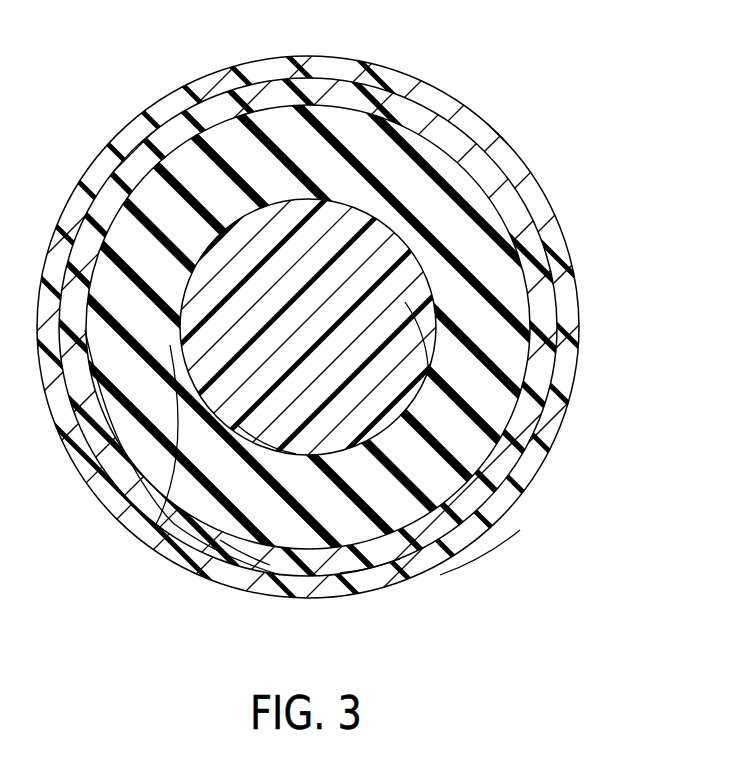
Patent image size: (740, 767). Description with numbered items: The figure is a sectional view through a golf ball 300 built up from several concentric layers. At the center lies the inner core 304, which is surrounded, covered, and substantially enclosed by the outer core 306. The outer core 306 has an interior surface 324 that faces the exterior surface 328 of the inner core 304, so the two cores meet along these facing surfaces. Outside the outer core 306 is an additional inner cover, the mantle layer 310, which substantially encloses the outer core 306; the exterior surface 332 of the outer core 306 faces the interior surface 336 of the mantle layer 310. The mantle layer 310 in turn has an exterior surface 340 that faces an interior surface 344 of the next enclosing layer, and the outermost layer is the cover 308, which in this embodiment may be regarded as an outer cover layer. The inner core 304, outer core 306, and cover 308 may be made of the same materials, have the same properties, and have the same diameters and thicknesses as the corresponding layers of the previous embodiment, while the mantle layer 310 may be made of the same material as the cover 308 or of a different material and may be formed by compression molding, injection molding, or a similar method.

The golf ball 300 is at (463, 586).
The inner core 304 is at (373, 242).
The outer core 306 is at (473, 233).
The cover 308 is at (568, 300).
The mantle layer 310 is at (473, 508).
The interior surface 324 is at (433, 343).
The exterior surface 328 is at (258, 440).
The exterior surface 332 is at (85, 330).
The interior surface 336 is at (247, 543).
The exterior surface 340 is at (170, 345).
The interior surface 344 is at (370, 573).